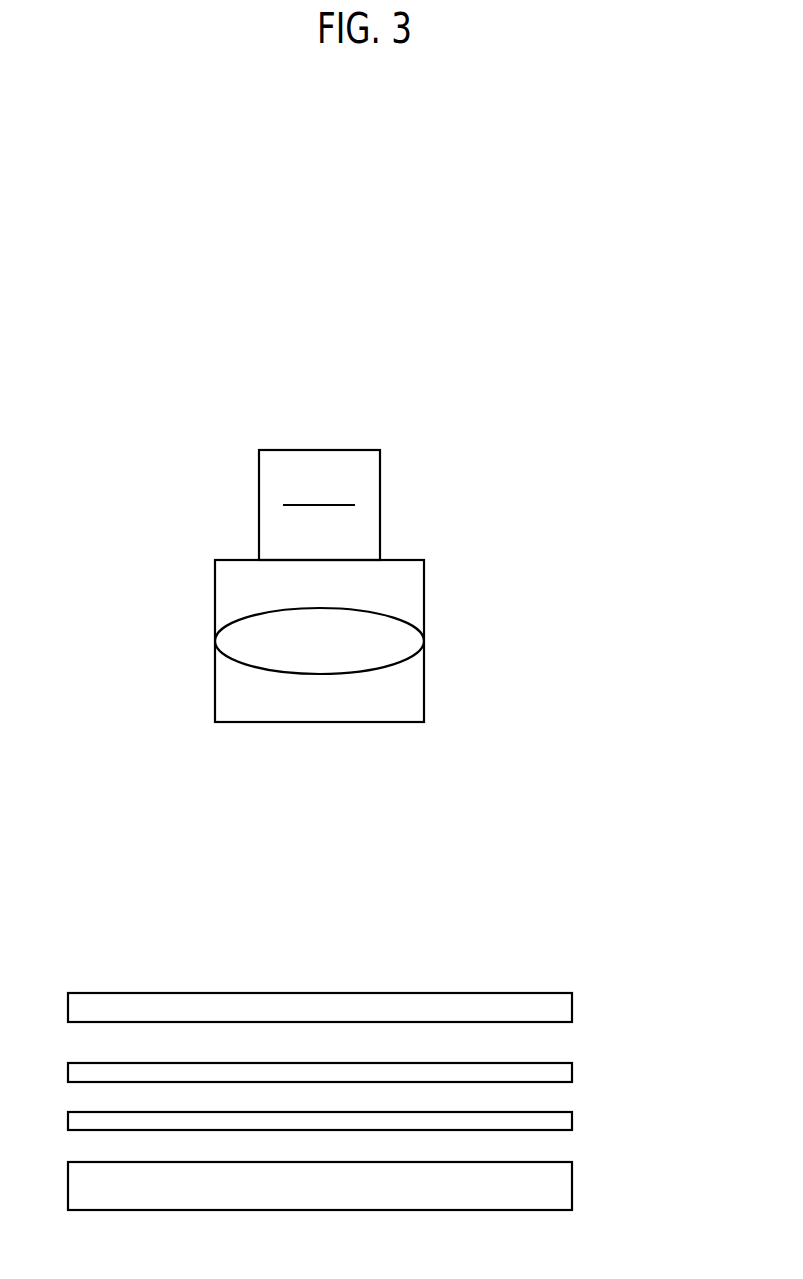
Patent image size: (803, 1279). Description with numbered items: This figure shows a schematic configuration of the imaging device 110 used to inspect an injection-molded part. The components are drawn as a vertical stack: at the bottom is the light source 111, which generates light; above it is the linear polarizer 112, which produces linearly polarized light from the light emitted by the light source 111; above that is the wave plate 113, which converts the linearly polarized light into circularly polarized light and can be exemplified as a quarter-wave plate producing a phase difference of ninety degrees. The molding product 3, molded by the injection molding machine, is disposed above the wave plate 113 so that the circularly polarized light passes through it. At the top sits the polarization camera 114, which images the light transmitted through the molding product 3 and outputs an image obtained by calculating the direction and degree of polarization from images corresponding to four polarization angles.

The imaging device 110 is at (155, 356).
The polarization camera 114 is at (380, 502).
The molding product 3 is at (572, 1005).
The wave plate 113 is at (572, 1070).
The linear polarizer 112 is at (572, 1120).
The light source 111 is at (572, 1182).